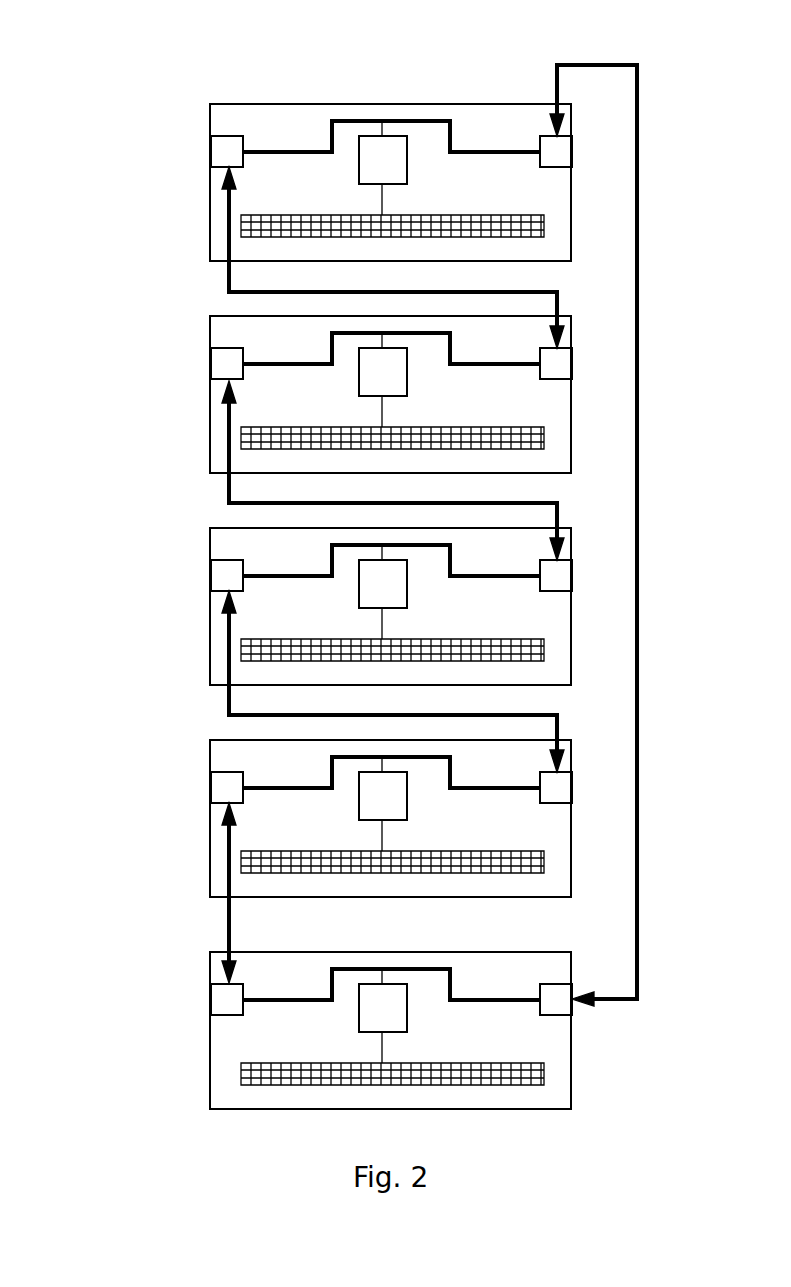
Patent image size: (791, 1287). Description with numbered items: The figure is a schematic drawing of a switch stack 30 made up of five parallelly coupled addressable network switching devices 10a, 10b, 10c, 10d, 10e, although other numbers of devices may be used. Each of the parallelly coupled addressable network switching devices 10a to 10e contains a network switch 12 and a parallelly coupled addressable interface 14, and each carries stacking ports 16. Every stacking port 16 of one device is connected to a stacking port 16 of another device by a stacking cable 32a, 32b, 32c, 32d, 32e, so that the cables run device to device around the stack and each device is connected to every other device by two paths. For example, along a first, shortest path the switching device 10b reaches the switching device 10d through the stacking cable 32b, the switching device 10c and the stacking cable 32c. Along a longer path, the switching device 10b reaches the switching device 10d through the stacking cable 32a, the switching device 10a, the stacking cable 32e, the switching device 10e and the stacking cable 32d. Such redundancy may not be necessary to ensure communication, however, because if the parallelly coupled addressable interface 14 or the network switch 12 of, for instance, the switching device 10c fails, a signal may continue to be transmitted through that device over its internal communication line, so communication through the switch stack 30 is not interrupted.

The switch stack 30 is at (147, 89).
The parallelly coupled addressable network switching device 10a is at (210, 213).
The parallelly coupled addressable network switching device 10b is at (210, 418).
The parallelly coupled addressable network switching device 10c is at (210, 613).
The parallelly coupled addressable network switching device 10d is at (208, 852).
The parallelly coupled addressable network switching device 10e is at (210, 1073).
The network switch 12 is at (450, 214).
The parallelly coupled addressable interface 14 is at (358, 165).
The stacking port 16 is at (210, 155).
The stacking cable 32a is at (227, 287).
The stacking cable 32b is at (227, 493).
The stacking cable 32c is at (227, 698).
The stacking cable 32d is at (223, 922).
The stacking cable 32e is at (640, 548).